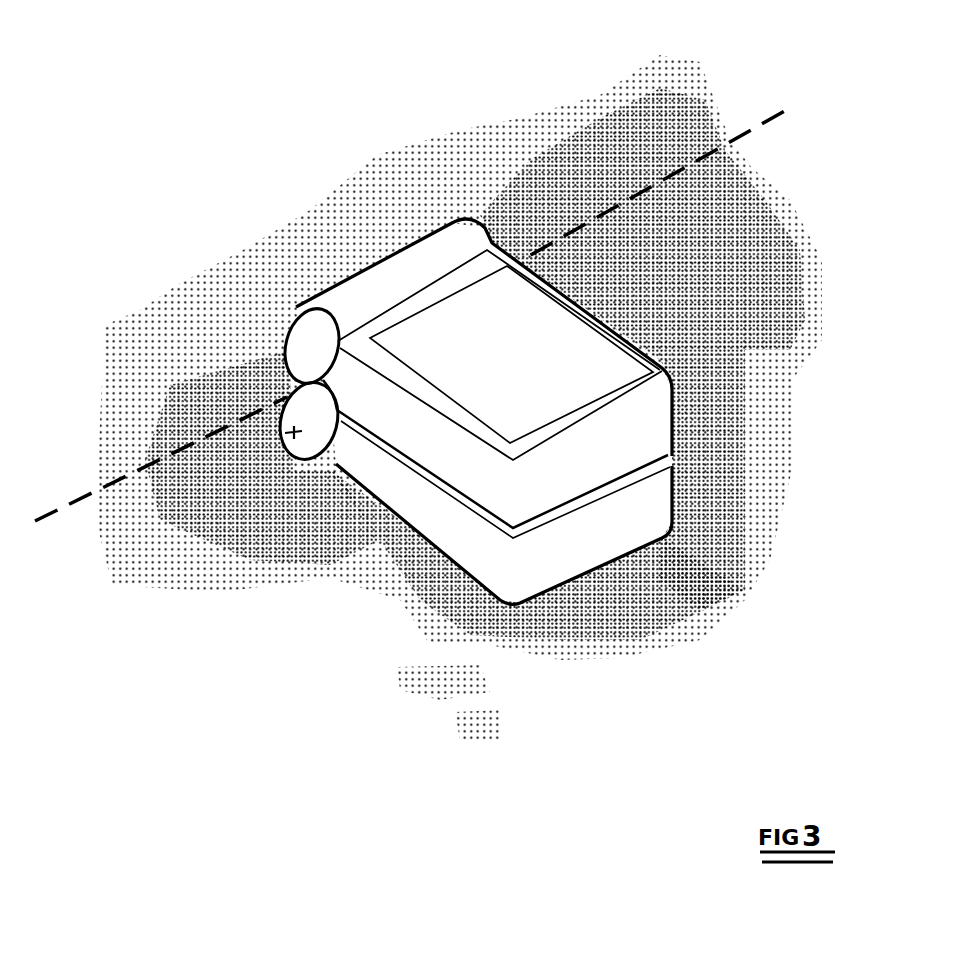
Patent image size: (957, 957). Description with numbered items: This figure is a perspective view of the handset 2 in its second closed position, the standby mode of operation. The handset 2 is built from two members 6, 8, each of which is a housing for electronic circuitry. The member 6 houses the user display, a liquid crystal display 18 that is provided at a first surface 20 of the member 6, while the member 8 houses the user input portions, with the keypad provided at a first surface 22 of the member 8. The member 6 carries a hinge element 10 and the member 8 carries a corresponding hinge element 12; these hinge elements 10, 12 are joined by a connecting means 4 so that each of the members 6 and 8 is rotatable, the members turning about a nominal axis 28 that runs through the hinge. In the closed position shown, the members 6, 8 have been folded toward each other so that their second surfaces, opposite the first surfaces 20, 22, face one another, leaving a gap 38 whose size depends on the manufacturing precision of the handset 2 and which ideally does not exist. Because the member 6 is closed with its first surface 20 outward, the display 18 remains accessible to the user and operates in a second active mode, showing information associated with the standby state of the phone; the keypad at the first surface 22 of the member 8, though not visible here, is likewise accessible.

The handset 2 is at (484, 311).
The connecting means 4 is at (282, 372).
The member 6 is at (658, 412).
The member 8 is at (672, 493).
The hinge element 10 is at (298, 336).
The hinge element 12 is at (301, 425).
The display 18 is at (604, 357).
The first surface 20 is at (659, 362).
The first surface 22 is at (650, 550).
The axis 28 is at (713, 159).
The gap 38 is at (672, 453).